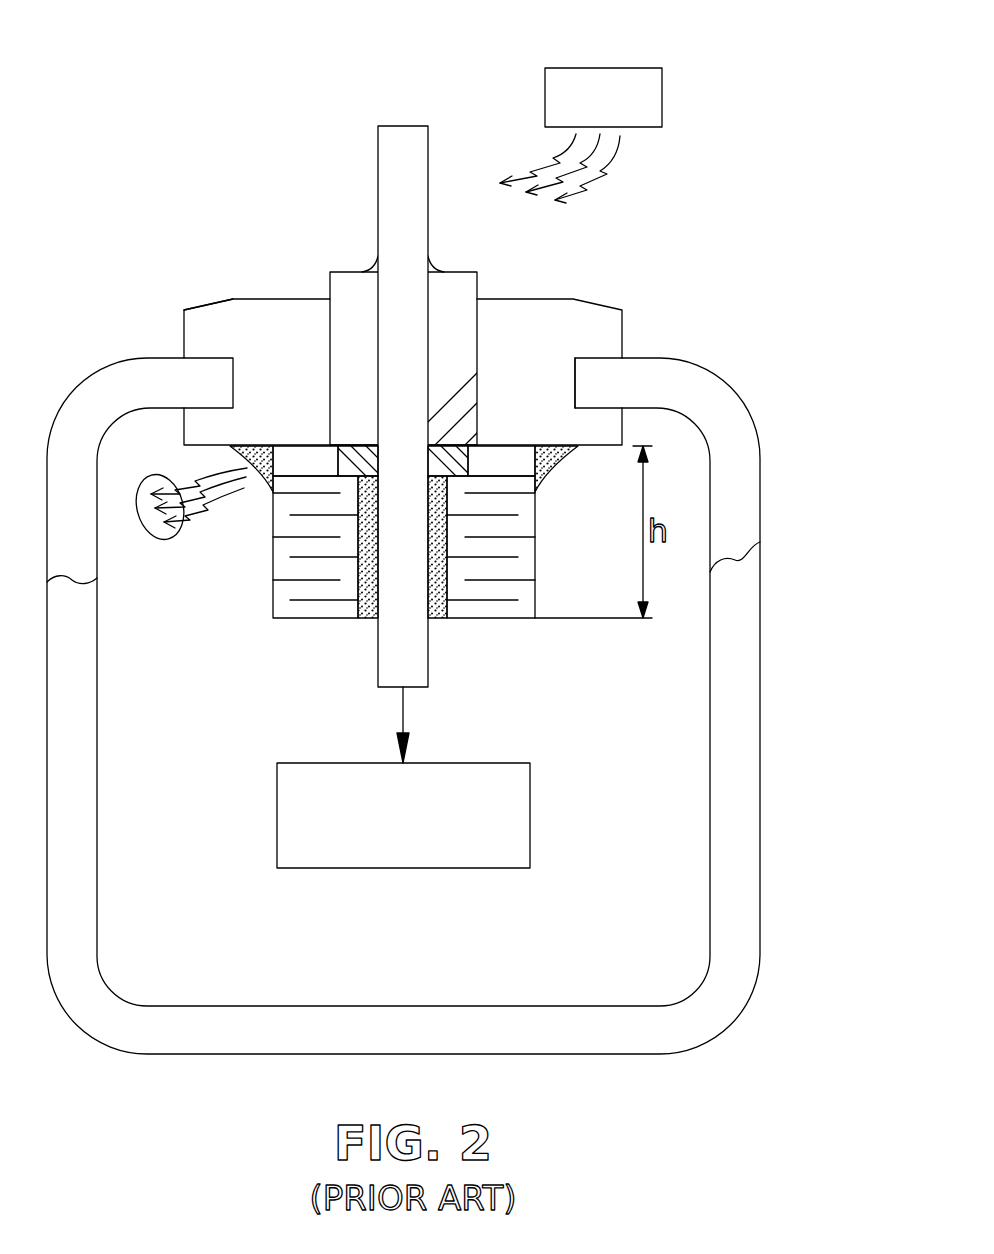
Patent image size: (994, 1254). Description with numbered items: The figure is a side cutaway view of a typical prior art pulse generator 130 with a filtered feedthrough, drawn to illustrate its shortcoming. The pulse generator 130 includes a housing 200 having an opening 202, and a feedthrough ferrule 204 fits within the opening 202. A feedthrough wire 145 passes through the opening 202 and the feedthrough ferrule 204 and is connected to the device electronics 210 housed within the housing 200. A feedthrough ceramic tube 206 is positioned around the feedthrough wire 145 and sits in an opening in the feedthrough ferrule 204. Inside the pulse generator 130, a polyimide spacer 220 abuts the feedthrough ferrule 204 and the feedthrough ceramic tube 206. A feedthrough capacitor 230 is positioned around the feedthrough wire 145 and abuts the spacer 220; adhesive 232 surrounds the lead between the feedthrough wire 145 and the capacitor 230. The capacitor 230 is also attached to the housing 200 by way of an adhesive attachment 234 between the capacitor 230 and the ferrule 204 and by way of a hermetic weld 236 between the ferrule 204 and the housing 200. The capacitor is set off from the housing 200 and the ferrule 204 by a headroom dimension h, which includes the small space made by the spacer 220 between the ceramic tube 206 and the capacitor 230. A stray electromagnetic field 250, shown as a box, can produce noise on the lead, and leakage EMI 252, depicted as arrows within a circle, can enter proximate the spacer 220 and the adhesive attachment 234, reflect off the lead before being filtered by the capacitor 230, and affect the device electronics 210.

The pulse generator 130 is at (740, 387).
The feedthrough wire 145 is at (403, 125).
The housing 200 is at (760, 507).
The opening 202 is at (575, 382).
The feedthrough ferrule 204 is at (262, 313).
The feedthrough ceramic tube 206 is at (455, 290).
The device electronics 210 is at (296, 763).
The polyimide spacer 220 is at (338, 460).
The feedthrough capacitor 230 is at (303, 618).
The adhesive 232 is at (437, 618).
The adhesive attachment 234 is at (552, 450).
The hermetic weld 236 is at (632, 352).
The stray electromagnetic field 250 is at (604, 68).
The leakage EMI 252 is at (145, 475).